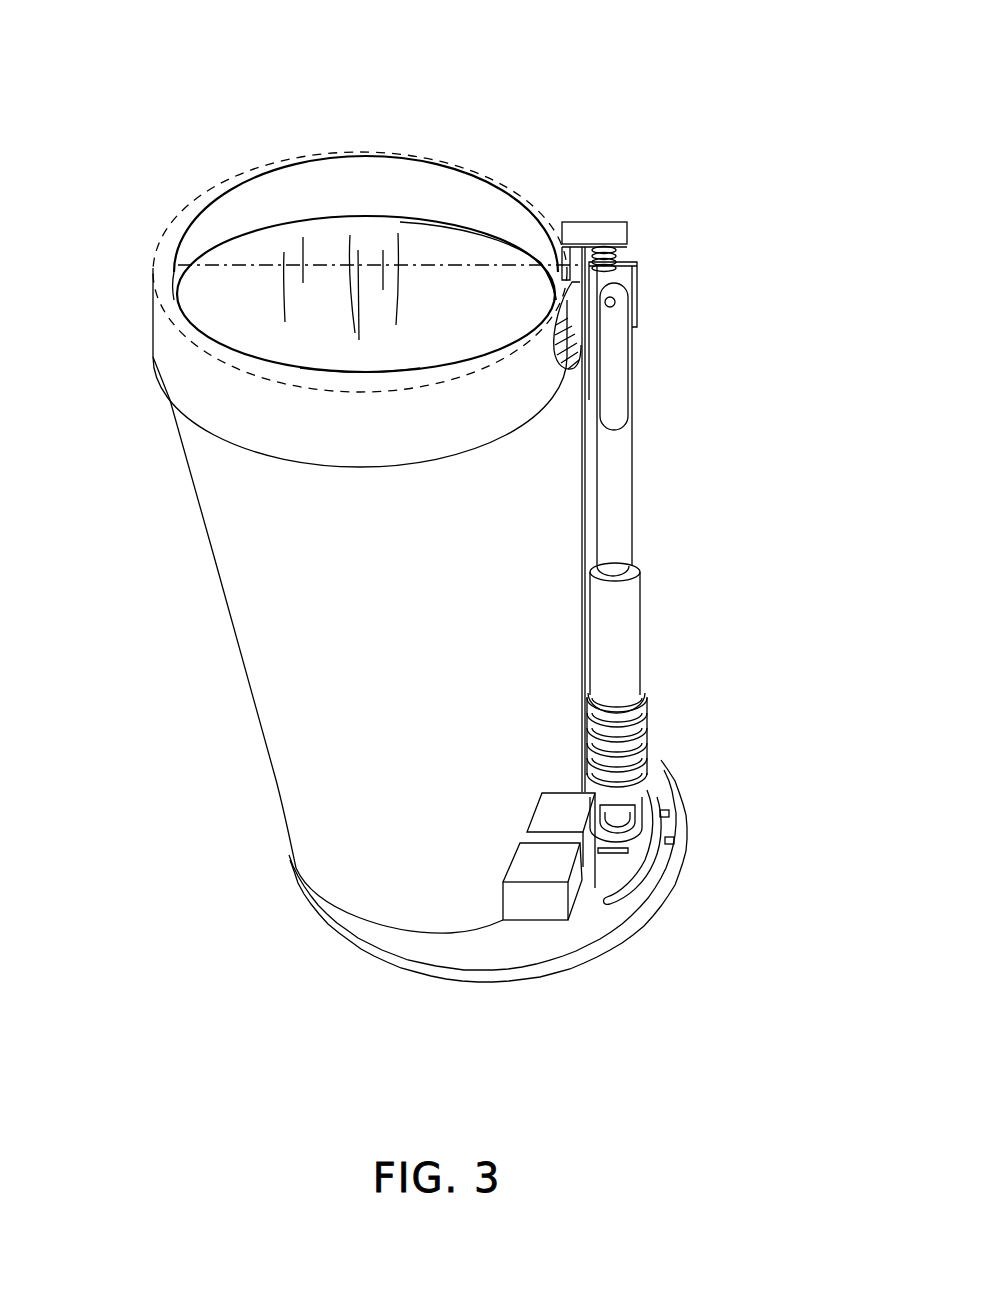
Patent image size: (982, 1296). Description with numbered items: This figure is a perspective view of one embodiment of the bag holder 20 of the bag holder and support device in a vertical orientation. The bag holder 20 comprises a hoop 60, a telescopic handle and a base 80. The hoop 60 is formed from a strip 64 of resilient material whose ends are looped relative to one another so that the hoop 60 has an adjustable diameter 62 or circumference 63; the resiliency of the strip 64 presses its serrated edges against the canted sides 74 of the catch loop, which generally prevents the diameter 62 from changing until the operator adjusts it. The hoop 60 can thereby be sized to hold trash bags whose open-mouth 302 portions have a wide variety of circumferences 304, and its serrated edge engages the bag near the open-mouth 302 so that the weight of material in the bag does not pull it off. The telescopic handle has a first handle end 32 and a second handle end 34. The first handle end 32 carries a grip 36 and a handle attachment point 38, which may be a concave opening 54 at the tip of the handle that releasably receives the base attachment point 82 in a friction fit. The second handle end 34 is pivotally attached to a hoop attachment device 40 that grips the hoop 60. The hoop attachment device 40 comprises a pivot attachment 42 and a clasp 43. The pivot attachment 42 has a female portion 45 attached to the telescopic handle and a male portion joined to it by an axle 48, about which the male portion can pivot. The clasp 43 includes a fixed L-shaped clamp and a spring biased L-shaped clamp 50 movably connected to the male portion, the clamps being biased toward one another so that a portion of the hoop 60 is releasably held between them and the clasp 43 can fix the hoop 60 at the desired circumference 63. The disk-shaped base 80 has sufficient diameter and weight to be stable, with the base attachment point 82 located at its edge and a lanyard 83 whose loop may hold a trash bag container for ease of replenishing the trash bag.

The bag holder 20 is at (700, 482).
The first handle end 32 is at (657, 790).
The second handle end 34 is at (742, 186).
The grip 36 is at (650, 700).
The handle attachment point 38 is at (652, 841).
The hoop attachment device 40 is at (684, 186).
The pivot attachment 42 is at (746, 227).
The clasp 43 is at (480, 218).
The female portion 45 is at (640, 282).
The axle 48 is at (612, 306).
The spring biased L-shaped clamp 50 is at (595, 230).
The opening 54 is at (660, 880).
The hoop 60 is at (552, 355).
The diameter 62 is at (447, 264).
The circumference 63 is at (349, 385).
The strip 64 is at (565, 370).
The canted sides 74 is at (553, 287).
The base 80 is at (417, 947).
The base attachment point 82 is at (648, 818).
The lanyard 83 is at (525, 833).
The open-mouth 302 is at (182, 226).
The circumferences 304 is at (583, 180).